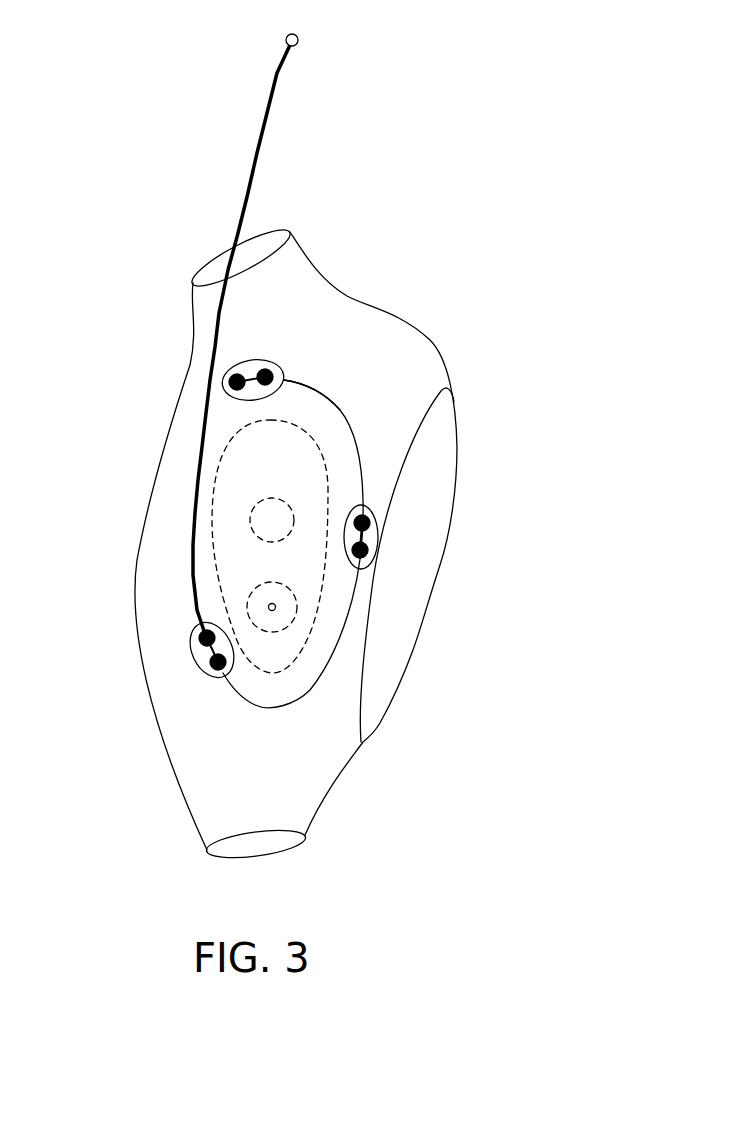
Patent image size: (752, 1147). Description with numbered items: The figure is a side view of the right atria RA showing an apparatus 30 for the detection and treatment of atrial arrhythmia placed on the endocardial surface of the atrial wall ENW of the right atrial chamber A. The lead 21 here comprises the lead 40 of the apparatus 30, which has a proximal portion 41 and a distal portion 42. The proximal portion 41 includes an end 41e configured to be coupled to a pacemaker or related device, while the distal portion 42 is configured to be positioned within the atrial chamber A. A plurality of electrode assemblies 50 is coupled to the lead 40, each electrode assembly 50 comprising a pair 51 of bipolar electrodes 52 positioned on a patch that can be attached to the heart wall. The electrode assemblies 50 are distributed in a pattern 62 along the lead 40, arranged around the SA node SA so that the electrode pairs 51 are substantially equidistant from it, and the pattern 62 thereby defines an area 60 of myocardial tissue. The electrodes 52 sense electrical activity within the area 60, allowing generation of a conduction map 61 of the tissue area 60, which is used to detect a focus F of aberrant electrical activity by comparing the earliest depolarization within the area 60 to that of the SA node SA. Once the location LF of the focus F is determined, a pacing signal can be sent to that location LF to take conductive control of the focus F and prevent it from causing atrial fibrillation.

The apparatus 30 is at (191, 79).
The lead 21 is at (288, 326).
The lead 40 is at (288, 326).
The proximal portion 41 is at (256, 152).
The end 41e is at (298, 37).
The distal portion 42 is at (320, 393).
The electrode assembly 50 is at (193, 663).
The pair 51 is at (489, 543).
The bipolar electrodes 52 is at (370, 525).
The area 60 is at (250, 470).
The conduction map 61 is at (247, 600).
The pattern 62 is at (230, 367).
The endocardial wall ENW is at (163, 620).
The SA node SA is at (272, 520).
The foci F is at (374, 637).
The location of foci LF is at (276, 607).
The right atria RA is at (383, 602).
The atrium A is at (313, 777).